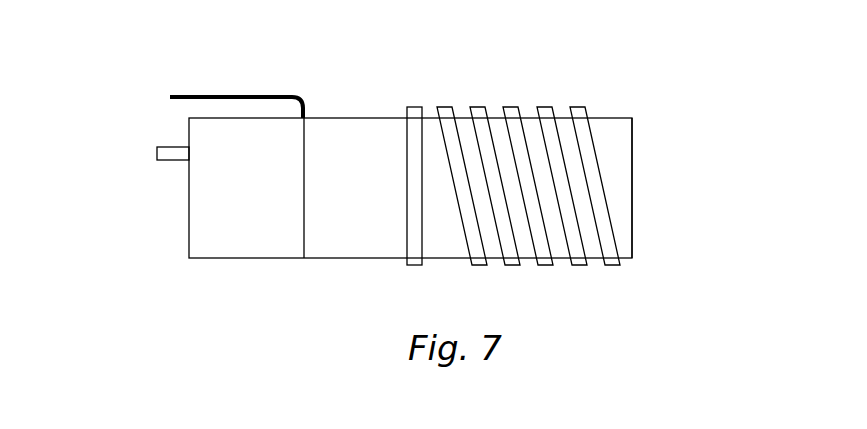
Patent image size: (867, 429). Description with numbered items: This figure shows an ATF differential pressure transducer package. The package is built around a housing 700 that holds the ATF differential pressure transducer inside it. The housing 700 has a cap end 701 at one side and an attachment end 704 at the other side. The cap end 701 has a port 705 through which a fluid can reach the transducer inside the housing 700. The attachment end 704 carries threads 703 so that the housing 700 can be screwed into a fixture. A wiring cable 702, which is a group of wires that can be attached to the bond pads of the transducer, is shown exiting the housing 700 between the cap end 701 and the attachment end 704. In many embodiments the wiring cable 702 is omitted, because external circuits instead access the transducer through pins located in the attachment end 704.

The housing 700 is at (168, 205).
The cap end 701 is at (213, 252).
The wiring cable 702 is at (298, 92).
The threads 703 is at (452, 110).
The attachment end 704 is at (620, 122).
The port 705 is at (157, 153).